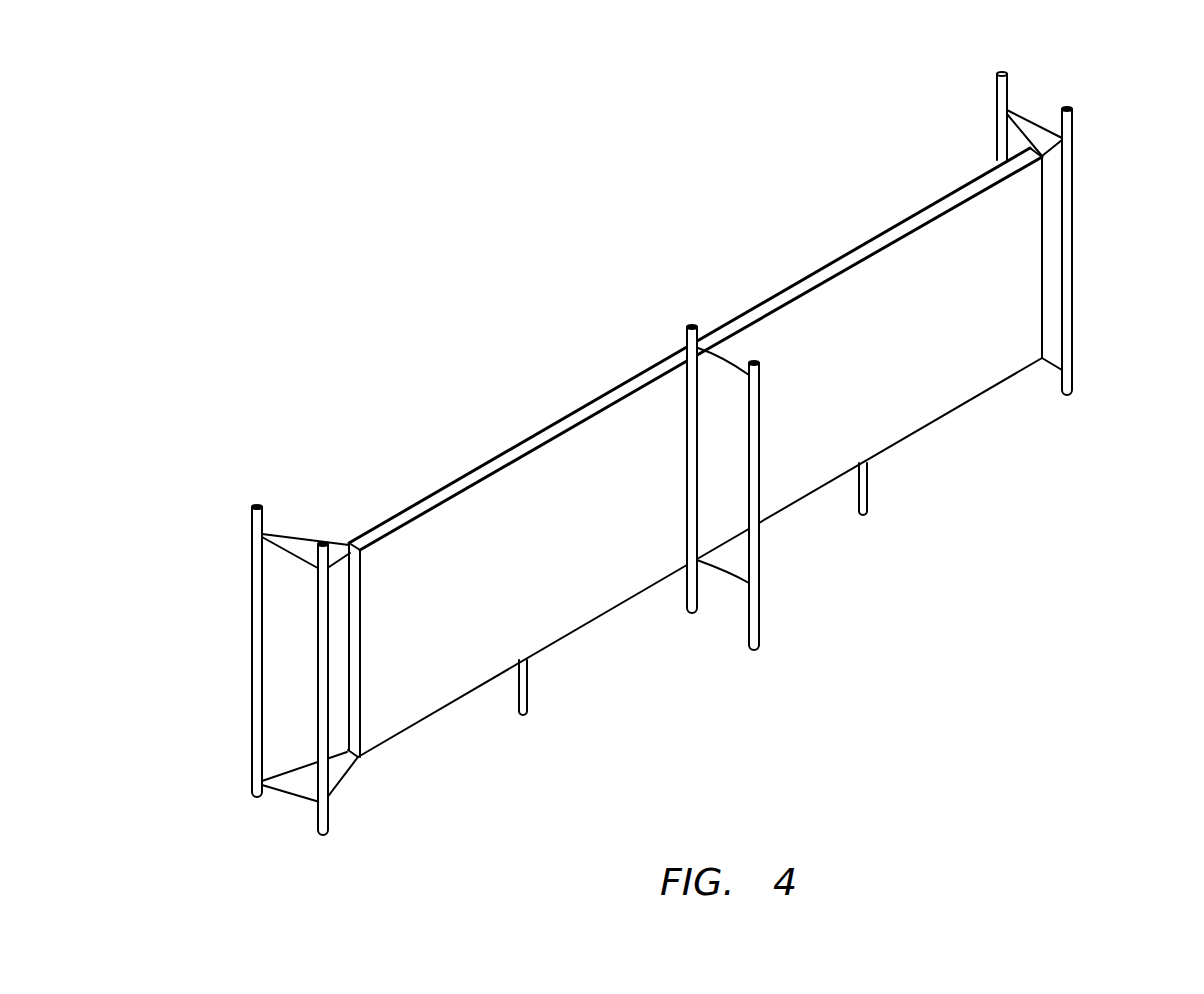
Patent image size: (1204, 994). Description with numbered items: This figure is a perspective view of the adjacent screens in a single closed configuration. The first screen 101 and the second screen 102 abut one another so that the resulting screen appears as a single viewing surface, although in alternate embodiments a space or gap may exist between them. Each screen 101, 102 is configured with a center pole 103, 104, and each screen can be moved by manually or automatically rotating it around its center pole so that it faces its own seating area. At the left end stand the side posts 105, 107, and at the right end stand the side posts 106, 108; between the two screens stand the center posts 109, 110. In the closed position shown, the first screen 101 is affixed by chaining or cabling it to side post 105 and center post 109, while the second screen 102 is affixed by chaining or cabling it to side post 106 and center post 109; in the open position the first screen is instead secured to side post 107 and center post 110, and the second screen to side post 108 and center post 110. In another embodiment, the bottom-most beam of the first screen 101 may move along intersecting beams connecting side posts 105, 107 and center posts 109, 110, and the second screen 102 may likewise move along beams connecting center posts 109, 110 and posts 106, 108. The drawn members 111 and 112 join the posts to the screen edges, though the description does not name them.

The first screen 101 is at (428, 662).
The second screen 102 is at (832, 430).
The center pole 103 is at (527, 662).
The center pole 104 is at (868, 463).
The side post 105 is at (313, 577).
The side post 106 is at (1072, 125).
The side post 107 is at (252, 518).
The side post 108 is at (1008, 78).
The center post 109 is at (687, 595).
The center post 110 is at (748, 635).
The connector 111 is at (332, 541).
The connector 112 is at (1036, 145).